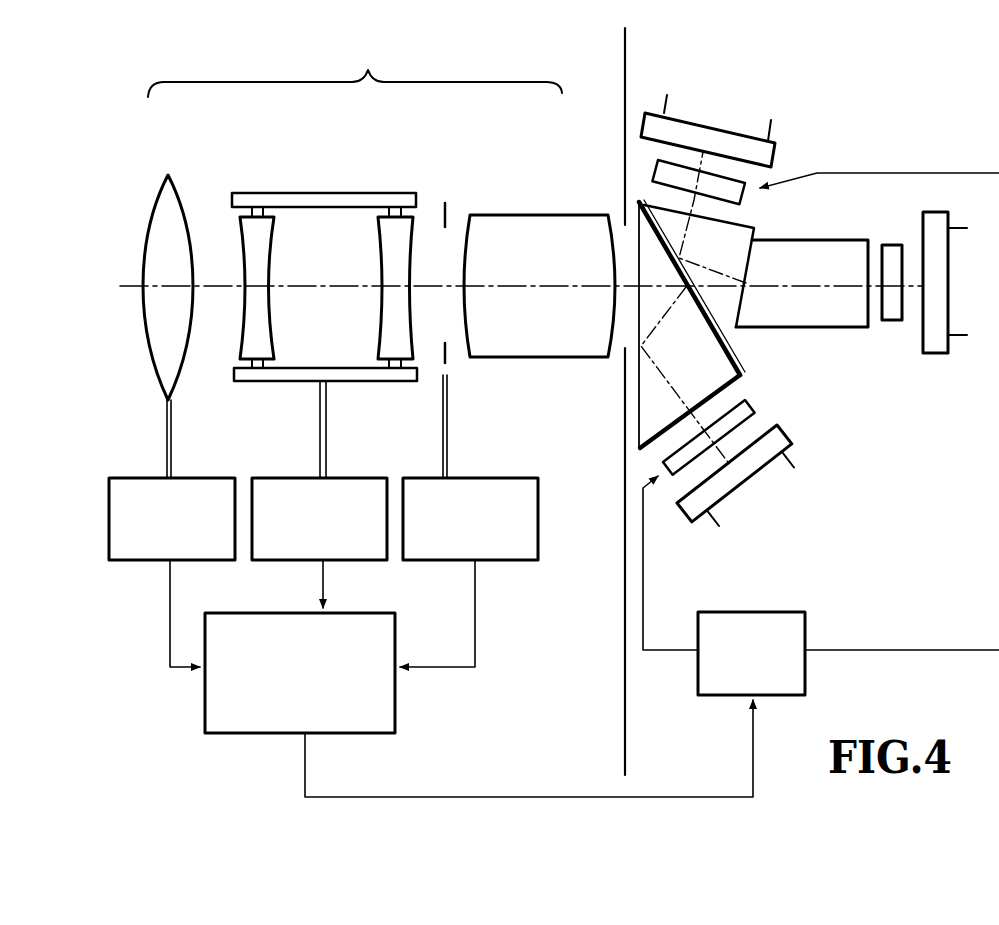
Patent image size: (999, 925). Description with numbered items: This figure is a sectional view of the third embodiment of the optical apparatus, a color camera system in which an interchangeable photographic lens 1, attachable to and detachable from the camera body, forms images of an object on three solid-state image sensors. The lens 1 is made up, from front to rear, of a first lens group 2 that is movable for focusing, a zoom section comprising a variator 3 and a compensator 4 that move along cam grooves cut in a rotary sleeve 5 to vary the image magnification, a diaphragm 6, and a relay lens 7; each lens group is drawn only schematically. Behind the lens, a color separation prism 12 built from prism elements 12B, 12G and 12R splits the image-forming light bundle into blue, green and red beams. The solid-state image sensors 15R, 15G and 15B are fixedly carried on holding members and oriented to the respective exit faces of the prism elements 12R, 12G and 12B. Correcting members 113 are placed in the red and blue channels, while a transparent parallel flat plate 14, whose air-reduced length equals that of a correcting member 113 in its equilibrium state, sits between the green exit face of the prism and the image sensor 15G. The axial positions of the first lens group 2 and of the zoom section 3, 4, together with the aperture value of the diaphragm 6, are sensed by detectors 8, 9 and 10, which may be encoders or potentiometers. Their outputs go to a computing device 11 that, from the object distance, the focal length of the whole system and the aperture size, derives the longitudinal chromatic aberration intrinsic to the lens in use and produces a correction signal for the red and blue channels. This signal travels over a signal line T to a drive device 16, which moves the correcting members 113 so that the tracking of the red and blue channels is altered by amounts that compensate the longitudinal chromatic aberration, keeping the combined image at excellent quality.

The photographic lens 1 is at (355, 68).
The first lens group 2 is at (169, 175).
The variator 3 is at (272, 232).
The compensator 4 is at (410, 230).
The rotary sleeve 5 is at (325, 196).
The diaphragm 6 is at (447, 213).
The relay lens 7 is at (517, 215).
The detector 8 is at (143, 557).
The detector 9 is at (287, 557).
The detector 10 is at (430, 560).
The computing device 11 is at (242, 735).
The color separation prism 12 is at (753, 308).
The prism element 12R is at (735, 333).
The prism element 12G is at (842, 318).
The prism element 12B is at (730, 367).
The correcting member 113 is at (655, 170).
The transparent parallel flat plate 14 is at (888, 243).
The solid-state image sensor 15R is at (778, 152).
The solid-state image sensor 15G is at (937, 218).
The solid-state image sensor 15B is at (690, 513).
The drive device 16 is at (752, 617).
The signal line T is at (560, 797).